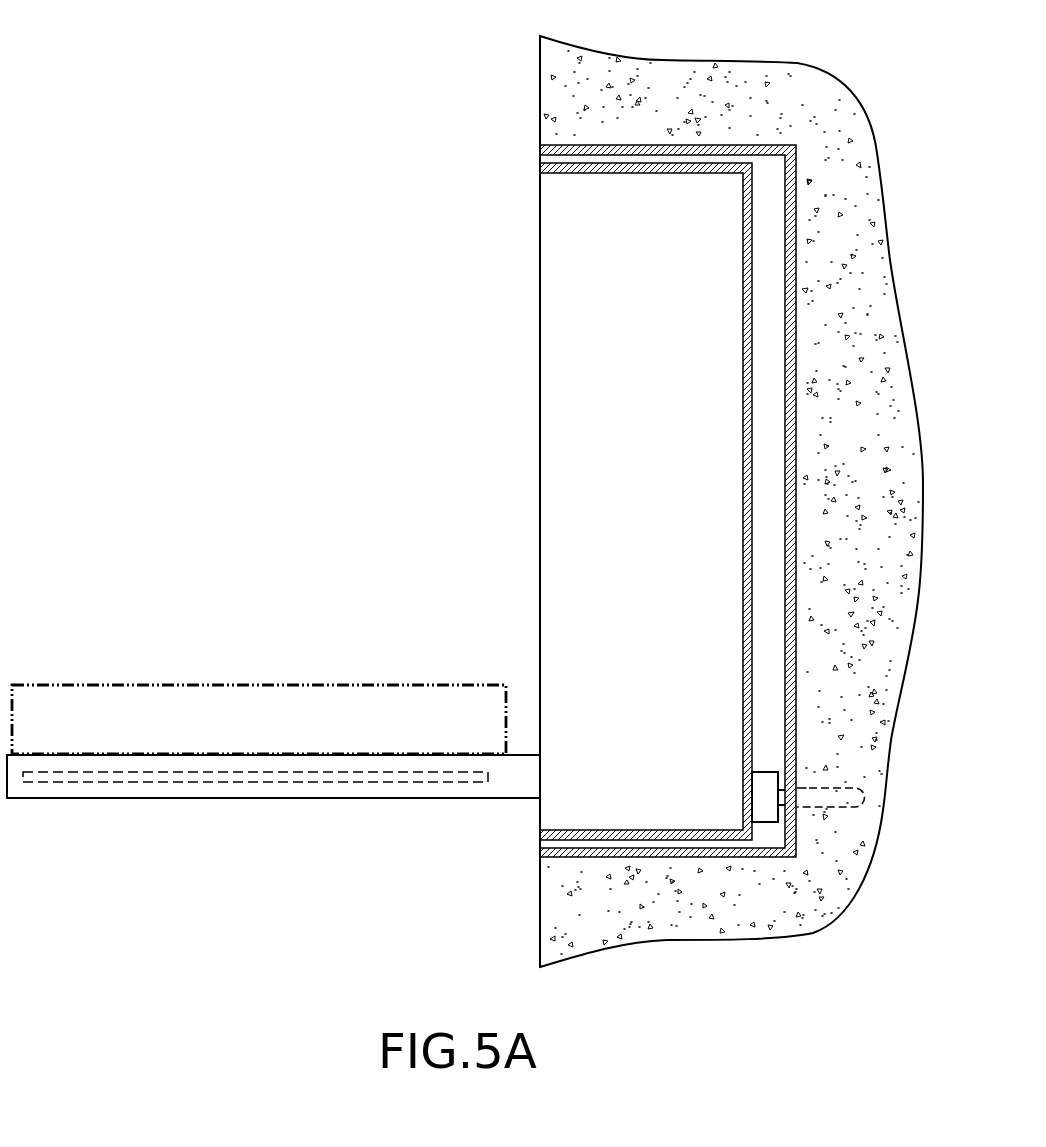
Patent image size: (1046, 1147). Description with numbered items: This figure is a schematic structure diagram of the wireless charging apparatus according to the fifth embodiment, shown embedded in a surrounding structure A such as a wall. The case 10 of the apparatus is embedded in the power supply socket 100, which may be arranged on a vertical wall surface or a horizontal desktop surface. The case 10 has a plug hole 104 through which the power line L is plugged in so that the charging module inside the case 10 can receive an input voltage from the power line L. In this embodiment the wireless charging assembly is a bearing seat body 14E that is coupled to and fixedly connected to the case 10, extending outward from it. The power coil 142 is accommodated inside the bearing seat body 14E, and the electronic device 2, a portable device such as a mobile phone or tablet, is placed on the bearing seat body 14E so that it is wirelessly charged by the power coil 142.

The concrete structure A is at (540, 95).
The power supply socket 100 is at (688, 147).
The case 10 is at (540, 167).
The plug hole 104 is at (762, 813).
The power line L is at (835, 805).
The electronic device 2 is at (153, 695).
The bearing seat body 14E is at (152, 819).
The power coil 142 is at (277, 787).